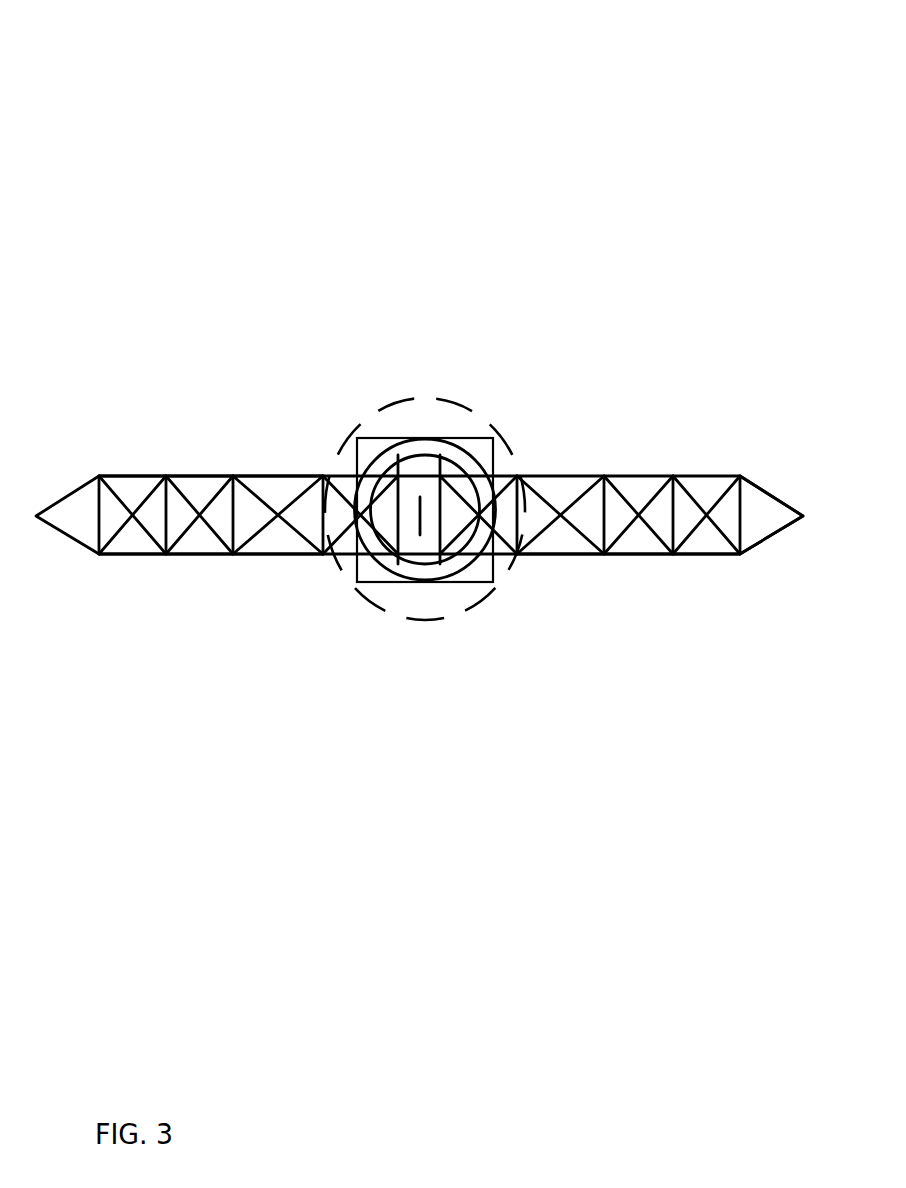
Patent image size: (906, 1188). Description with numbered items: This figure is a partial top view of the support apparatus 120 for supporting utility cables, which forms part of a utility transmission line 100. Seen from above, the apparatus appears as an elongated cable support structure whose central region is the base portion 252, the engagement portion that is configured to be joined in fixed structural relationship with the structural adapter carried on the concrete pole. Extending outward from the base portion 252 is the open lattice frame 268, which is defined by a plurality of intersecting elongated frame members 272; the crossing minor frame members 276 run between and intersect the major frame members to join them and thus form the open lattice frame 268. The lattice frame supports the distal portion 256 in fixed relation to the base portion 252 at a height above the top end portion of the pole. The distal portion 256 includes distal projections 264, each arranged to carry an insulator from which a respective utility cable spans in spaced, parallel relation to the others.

The utility transmission line 100 is at (767, 38).
The minor frame members 276 is at (151, 493).
The frame members 272 is at (185, 555).
The base portion 252 is at (512, 456).
The support apparatus 120 is at (420, 510).
The distal portion 256 is at (780, 496).
The distal projections 264 is at (628, 515).
The open lattice frame 268 is at (568, 555).